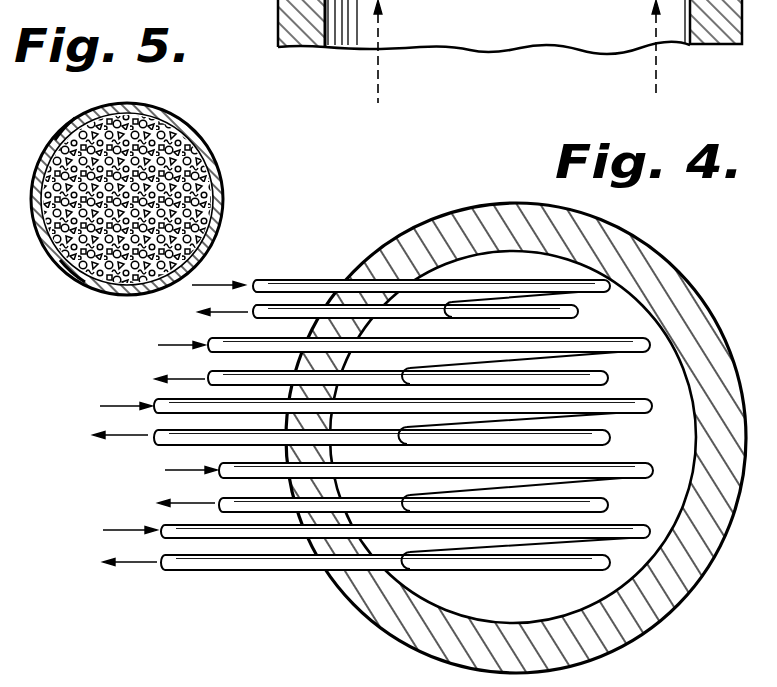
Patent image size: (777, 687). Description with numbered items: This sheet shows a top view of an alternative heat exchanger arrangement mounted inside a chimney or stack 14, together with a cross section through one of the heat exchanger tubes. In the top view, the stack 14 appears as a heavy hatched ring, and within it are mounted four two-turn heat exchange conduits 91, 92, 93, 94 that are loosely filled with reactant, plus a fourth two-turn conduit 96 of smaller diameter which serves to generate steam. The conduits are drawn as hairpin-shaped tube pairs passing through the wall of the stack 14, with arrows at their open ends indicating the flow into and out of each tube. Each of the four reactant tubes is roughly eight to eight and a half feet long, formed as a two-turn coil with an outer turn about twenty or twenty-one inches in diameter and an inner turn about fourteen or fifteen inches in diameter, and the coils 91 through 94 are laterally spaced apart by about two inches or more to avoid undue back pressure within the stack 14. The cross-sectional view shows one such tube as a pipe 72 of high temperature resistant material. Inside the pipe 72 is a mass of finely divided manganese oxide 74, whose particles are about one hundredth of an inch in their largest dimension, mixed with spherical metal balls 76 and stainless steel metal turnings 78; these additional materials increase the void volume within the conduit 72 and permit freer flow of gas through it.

In FIG. 4, the chimney or stack 14 is at (640, 262).
In FIG. 4, the fourth two-turn conduit 96 is at (491, 282).
In FIG. 4, the two-turn heat exchange conduit 94 is at (645, 345).
In FIG. 4, the two-turn heat exchange conduit 93 is at (650, 405).
In FIG. 4, the two-turn heat exchange conduit 92 is at (652, 478).
In FIG. 4, the two-turn heat exchange conduit 91 is at (450, 560).
In FIG. 5, the pipe 72 is at (190, 124).
In FIG. 5, the manganese oxide 74 is at (68, 147).
In FIG. 5, the spherical metal balls 76 is at (80, 270).
In FIG. 5, the stainless steel metal turnings 78 is at (197, 222).